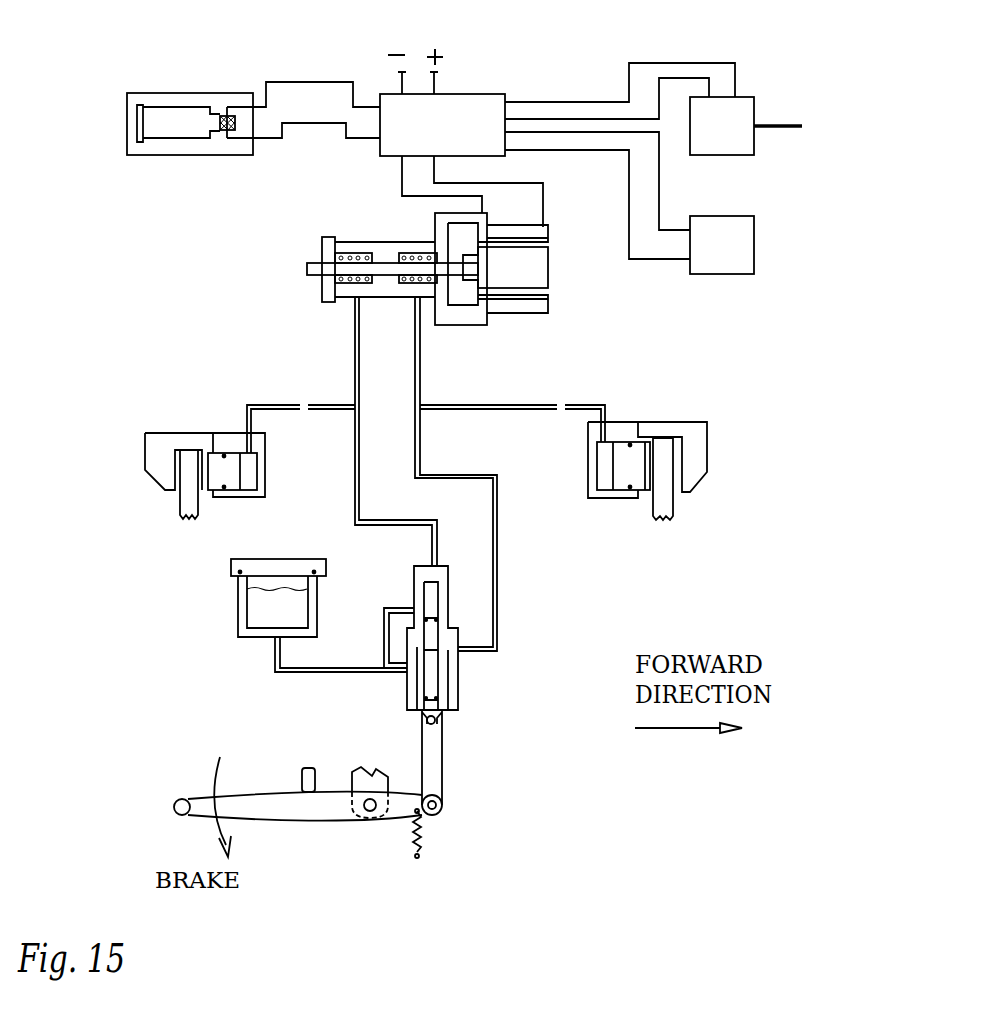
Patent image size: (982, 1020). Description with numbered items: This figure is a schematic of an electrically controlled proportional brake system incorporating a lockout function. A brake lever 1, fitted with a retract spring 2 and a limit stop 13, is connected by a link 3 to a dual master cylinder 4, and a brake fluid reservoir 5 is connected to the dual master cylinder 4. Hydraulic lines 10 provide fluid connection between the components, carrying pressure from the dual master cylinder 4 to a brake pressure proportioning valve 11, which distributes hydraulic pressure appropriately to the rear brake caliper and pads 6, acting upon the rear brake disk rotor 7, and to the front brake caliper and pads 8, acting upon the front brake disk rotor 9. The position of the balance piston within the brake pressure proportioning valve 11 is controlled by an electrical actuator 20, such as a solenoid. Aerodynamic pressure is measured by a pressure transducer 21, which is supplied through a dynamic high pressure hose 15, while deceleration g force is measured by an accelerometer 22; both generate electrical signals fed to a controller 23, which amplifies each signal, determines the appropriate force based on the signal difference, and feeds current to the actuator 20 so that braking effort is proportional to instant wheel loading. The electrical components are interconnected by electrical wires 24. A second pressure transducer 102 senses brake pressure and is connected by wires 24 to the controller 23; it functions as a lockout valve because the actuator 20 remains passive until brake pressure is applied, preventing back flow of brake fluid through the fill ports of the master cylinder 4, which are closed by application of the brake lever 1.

The brake lever 1 is at (262, 822).
The retract spring 2 is at (420, 838).
The link 3 is at (448, 757).
The dual master cylinder 4 is at (460, 680).
The brake fluid reservoir 5 is at (240, 625).
The rear brake caliper and pads 6 is at (163, 433).
The rear brake disk rotor 7 is at (180, 510).
The front brake caliper and pads 8 is at (708, 438).
The front brake disk rotor 9 is at (673, 507).
The hydraulic lines 10 is at (355, 445).
The brake pressure proportioning valve 11 is at (375, 242).
The limit stop 13 is at (302, 774).
The dynamic high pressure hose 15 is at (790, 130).
The electrical actuator 20 is at (548, 230).
The pressure transducer 21 is at (748, 157).
The accelerometer 22 is at (143, 93).
The controller 23 is at (386, 93).
The electrical wires 24 is at (638, 62).
The second pressure transducer 102 is at (747, 276).